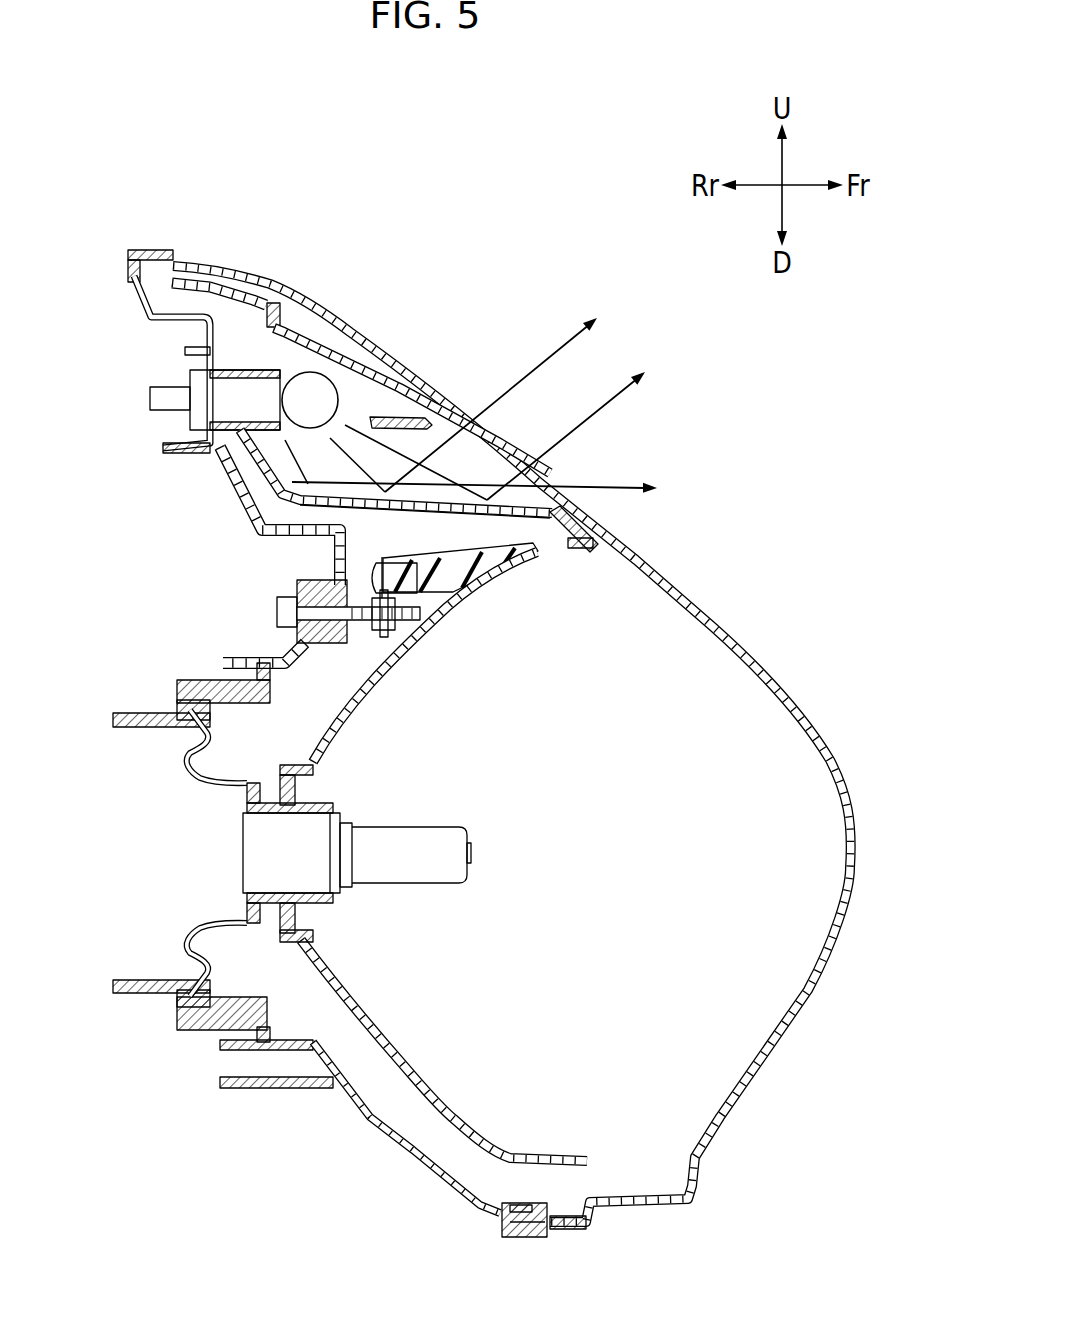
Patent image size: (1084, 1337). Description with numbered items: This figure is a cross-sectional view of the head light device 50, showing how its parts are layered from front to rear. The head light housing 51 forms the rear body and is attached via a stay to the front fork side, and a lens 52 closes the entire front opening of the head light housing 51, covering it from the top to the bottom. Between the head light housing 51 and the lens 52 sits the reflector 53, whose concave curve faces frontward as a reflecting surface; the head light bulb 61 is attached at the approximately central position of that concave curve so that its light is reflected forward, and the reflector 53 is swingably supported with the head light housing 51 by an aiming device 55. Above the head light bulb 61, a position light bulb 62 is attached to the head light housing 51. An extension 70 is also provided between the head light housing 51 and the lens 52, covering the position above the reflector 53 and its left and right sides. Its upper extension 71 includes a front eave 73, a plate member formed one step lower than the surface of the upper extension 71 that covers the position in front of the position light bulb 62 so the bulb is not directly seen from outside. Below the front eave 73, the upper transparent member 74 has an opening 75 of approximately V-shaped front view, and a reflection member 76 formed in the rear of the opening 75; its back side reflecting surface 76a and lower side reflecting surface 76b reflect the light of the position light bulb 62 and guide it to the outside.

The head light device 50 is at (195, 216).
The head light housing 51 is at (244, 517).
The lens 52 is at (768, 686).
The reflector 53 is at (403, 1078).
The aiming device 55 is at (352, 578).
The head light bulb 61 is at (471, 857).
The position light bulb 62 is at (307, 387).
The extension 70 is at (256, 326).
The upper extension 71 is at (253, 276).
The front eave 73 is at (345, 340).
The upper transparent member 74 is at (474, 471).
The opening 75 is at (442, 456).
The reflection member 76 is at (331, 490).
The back side reflecting surface 76a is at (250, 406).
The lower side reflecting surface 76b is at (433, 500).